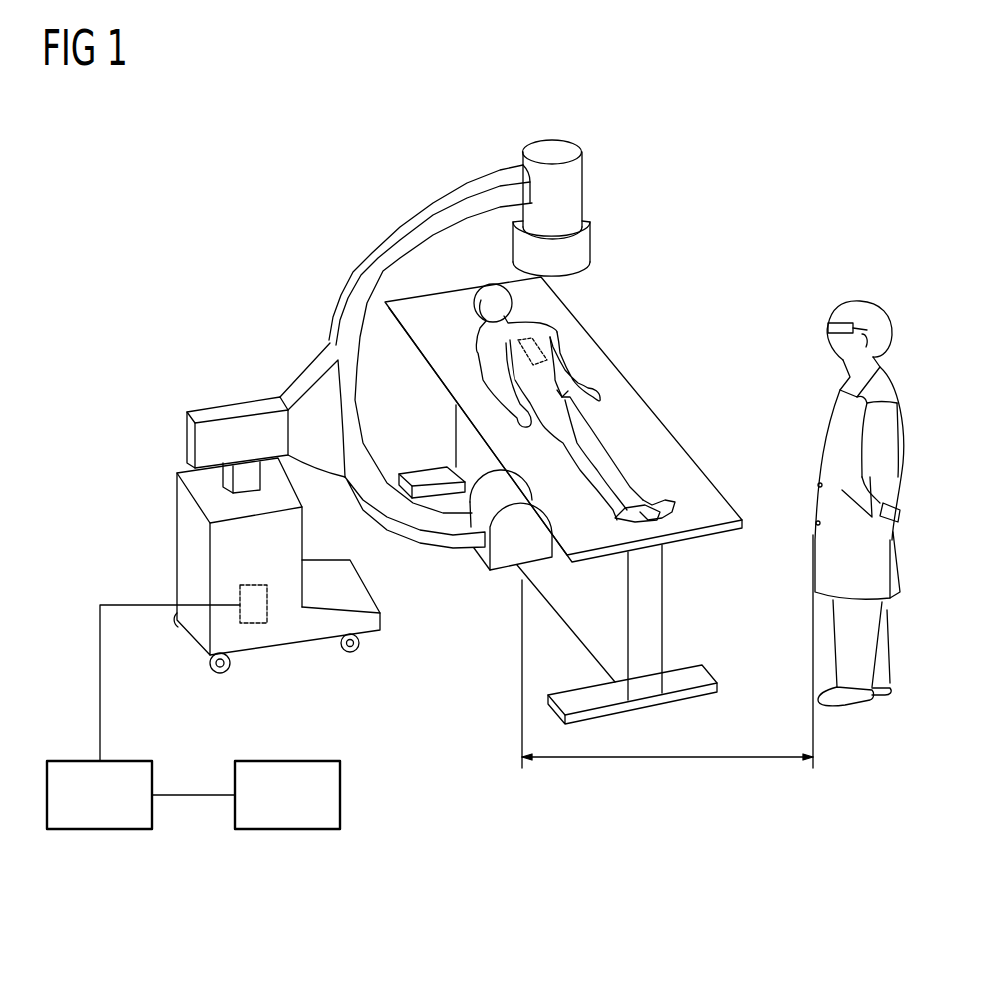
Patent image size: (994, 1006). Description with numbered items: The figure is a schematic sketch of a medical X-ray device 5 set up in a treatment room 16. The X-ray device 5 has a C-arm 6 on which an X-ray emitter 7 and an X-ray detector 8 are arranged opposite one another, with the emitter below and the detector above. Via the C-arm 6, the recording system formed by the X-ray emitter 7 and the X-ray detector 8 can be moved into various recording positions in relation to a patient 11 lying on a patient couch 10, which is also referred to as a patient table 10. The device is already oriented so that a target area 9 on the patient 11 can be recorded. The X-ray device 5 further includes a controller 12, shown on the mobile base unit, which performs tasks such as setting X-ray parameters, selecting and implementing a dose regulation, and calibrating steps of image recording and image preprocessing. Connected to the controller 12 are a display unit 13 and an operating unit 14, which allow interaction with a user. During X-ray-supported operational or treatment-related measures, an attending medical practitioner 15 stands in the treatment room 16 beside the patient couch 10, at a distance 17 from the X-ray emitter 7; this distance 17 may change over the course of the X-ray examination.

The X-ray device 5 is at (353, 197).
The C-arm 6 is at (433, 200).
The X-ray emitter 7 is at (503, 574).
The X-ray detector 8 is at (596, 244).
The target area 9 is at (535, 345).
The patient couch 10 is at (693, 477).
The patient 11 is at (597, 422).
The controller 12 is at (257, 624).
The display unit 13 is at (98, 830).
The operating unit 14 is at (290, 830).
The attending medical practitioner 15 is at (850, 708).
The treatment room 16 is at (190, 258).
The distance 17 is at (668, 759).